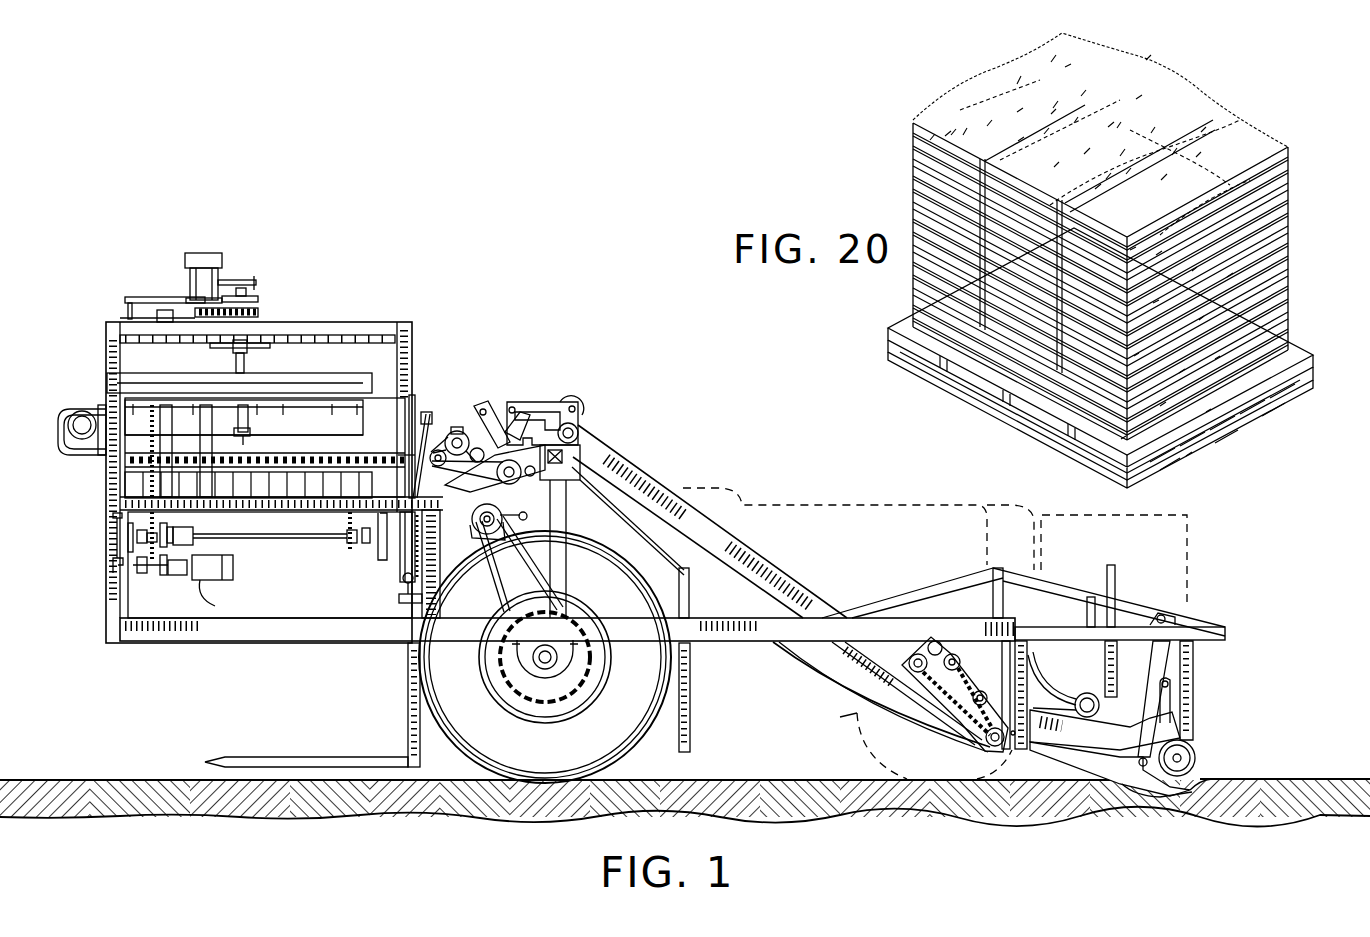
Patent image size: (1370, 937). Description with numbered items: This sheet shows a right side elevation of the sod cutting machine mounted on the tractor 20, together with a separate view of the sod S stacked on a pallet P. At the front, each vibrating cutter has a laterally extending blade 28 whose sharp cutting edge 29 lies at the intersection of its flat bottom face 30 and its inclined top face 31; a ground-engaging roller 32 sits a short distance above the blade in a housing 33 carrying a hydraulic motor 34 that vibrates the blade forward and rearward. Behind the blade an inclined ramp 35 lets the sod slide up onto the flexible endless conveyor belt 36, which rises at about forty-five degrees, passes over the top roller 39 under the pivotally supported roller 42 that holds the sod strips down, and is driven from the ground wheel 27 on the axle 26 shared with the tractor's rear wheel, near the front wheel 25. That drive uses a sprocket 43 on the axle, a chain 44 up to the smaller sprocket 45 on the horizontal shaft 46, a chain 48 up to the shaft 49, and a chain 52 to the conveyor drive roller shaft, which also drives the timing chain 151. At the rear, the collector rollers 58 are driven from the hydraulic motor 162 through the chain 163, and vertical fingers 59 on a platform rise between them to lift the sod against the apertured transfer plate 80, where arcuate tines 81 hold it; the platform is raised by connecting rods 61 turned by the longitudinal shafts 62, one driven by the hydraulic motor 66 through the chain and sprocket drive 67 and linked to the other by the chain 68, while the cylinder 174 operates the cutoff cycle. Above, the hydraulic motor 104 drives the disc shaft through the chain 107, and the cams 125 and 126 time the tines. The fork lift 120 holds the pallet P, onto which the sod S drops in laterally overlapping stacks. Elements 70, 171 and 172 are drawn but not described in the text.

In FIG. 1, the hydraulic motor 104 is at (190, 256).
In FIG. 1, the cam 126 is at (257, 283).
In FIG. 1, the cam 125 is at (259, 299).
In FIG. 1, the chain 107 is at (260, 313).
In FIG. 1, the hydraulic motor 162 is at (82, 418).
In FIG. 1, the arcuate tines 81 is at (252, 422).
In FIG. 1, the transfer plate 80 is at (298, 433).
In FIG. 1, the cylinder 174 is at (424, 430).
In FIG. 1, the collector roller 58 is at (283, 466).
In FIG. 1, the chain 163 is at (405, 455).
In FIG. 1, the vertical fingers 59 is at (135, 480).
In FIG. 1, the connecting rods 61 is at (112, 527).
In FIG. 1, the chain 68 is at (128, 538).
In FIG. 1, the bearing 70 is at (113, 566).
In FIG. 1, the horizontal shaft 62 is at (278, 538).
In FIG. 1, the hydraulic cylinder 171 is at (403, 560).
In FIG. 1, the cylinder mount 172 is at (400, 590).
In FIG. 1, the chain and sprocket drive 67 is at (162, 577).
In FIG. 1, the hydraulic motor 66 is at (218, 580).
In FIG. 1, the fork lift 120 is at (282, 756).
In FIG. 1, the chain 151 is at (444, 428).
In FIG. 1, the pivotally supported roller 42 is at (568, 403).
In FIG. 1, the top roller 39 is at (578, 431).
In FIG. 1, the horizontal shaft 49 is at (536, 471).
In FIG. 1, the chain 52 is at (466, 470).
In FIG. 1, the horizontal shaft 46 is at (476, 522).
In FIG. 1, the chain 48 is at (512, 517).
In FIG. 1, the sprocket 45 is at (494, 545).
In FIG. 1, the chain 44 is at (540, 568).
In FIG. 1, the sprocket 43 is at (515, 665).
In FIG. 1, the axle 26 is at (545, 668).
In FIG. 1, the ground wheel 27 is at (640, 735).
In FIG. 1, the conveyor belt 36 is at (803, 668).
In FIG. 1, the front wheel 25 is at (840, 718).
In FIG. 1, the ramp 35 is at (1050, 745).
In FIG. 1, the housing 33 is at (1100, 741).
In FIG. 1, the hydraulic motor 34 is at (1097, 700).
In FIG. 1, the ground-engaging roller 32 is at (1192, 752).
In FIG. 1, the top face 31 is at (1190, 770).
In FIG. 1, the cutting edge 29 is at (1200, 778).
In FIG. 1, the blade 28 is at (1168, 790).
In FIG. 1, the bottom face 30 is at (1186, 792).
In FIG. 1, the tractor 20 is at (836, 505).
In FIG. 20, the pallet P is at (1240, 418).
In FIG. 20, the sod S is at (1250, 125).